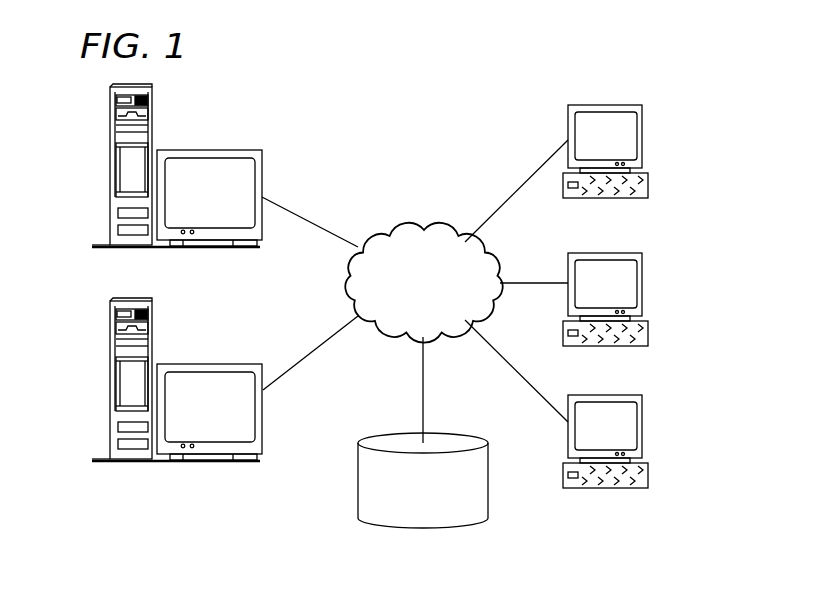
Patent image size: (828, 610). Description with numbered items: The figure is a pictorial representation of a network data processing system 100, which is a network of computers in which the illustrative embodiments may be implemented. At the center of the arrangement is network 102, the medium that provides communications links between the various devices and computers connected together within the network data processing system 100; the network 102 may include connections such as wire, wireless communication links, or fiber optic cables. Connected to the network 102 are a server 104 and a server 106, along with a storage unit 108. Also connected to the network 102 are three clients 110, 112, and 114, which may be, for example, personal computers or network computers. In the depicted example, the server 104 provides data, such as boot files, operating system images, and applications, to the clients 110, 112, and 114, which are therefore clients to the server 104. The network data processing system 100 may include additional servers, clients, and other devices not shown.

The network data processing system 100 is at (472, 120).
The network 102 is at (395, 232).
The server 104 is at (110, 166).
The server 106 is at (110, 385).
The storage unit 108 is at (440, 530).
The client 110 is at (642, 135).
The client 112 is at (643, 277).
The client 114 is at (643, 428).